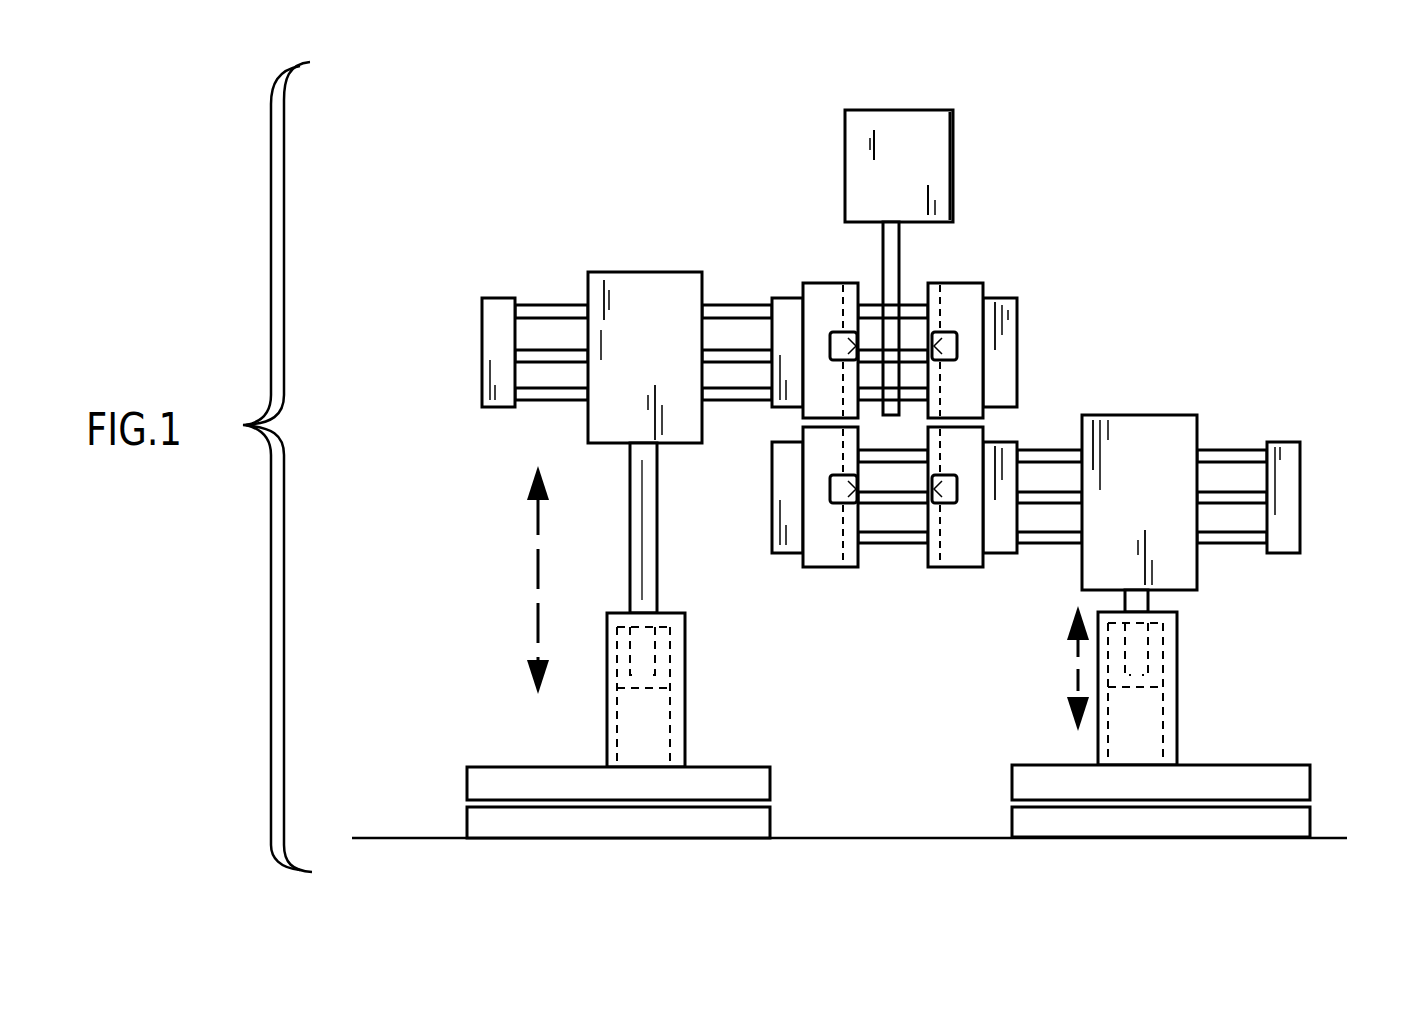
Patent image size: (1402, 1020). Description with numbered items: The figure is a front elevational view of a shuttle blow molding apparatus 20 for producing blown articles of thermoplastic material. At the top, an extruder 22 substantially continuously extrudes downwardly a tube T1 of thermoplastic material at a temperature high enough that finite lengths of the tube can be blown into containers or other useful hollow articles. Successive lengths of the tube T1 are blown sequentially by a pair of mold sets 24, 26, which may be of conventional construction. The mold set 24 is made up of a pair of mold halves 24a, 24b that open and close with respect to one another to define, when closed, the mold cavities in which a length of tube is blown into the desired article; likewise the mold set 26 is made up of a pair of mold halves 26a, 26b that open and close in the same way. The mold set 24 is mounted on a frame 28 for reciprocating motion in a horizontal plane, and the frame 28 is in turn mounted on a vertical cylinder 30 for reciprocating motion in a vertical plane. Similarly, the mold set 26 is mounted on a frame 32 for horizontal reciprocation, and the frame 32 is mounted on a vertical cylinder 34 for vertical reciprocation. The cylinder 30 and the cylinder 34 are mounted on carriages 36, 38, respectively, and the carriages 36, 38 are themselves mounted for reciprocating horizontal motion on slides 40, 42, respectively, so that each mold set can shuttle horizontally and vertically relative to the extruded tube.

The shuttle blow molding apparatus 20 is at (970, 118).
The extruder 22 is at (940, 197).
The tube T1 is at (893, 260).
The mold set 24 is at (907, 318).
The mold half 24a is at (970, 355).
The mold half 24b is at (818, 300).
The mold set 26 is at (915, 520).
The mold half 26a is at (968, 548).
The mold half 26b is at (830, 555).
The frame 28 is at (640, 285).
The vertical cylinder 30 is at (685, 703).
The frame 32 is at (1122, 422).
The vertical cylinder 34 is at (1165, 712).
The carriage 36 is at (745, 775).
The carriage 38 is at (1283, 775).
The slide 40 is at (748, 820).
The slide 42 is at (1290, 822).